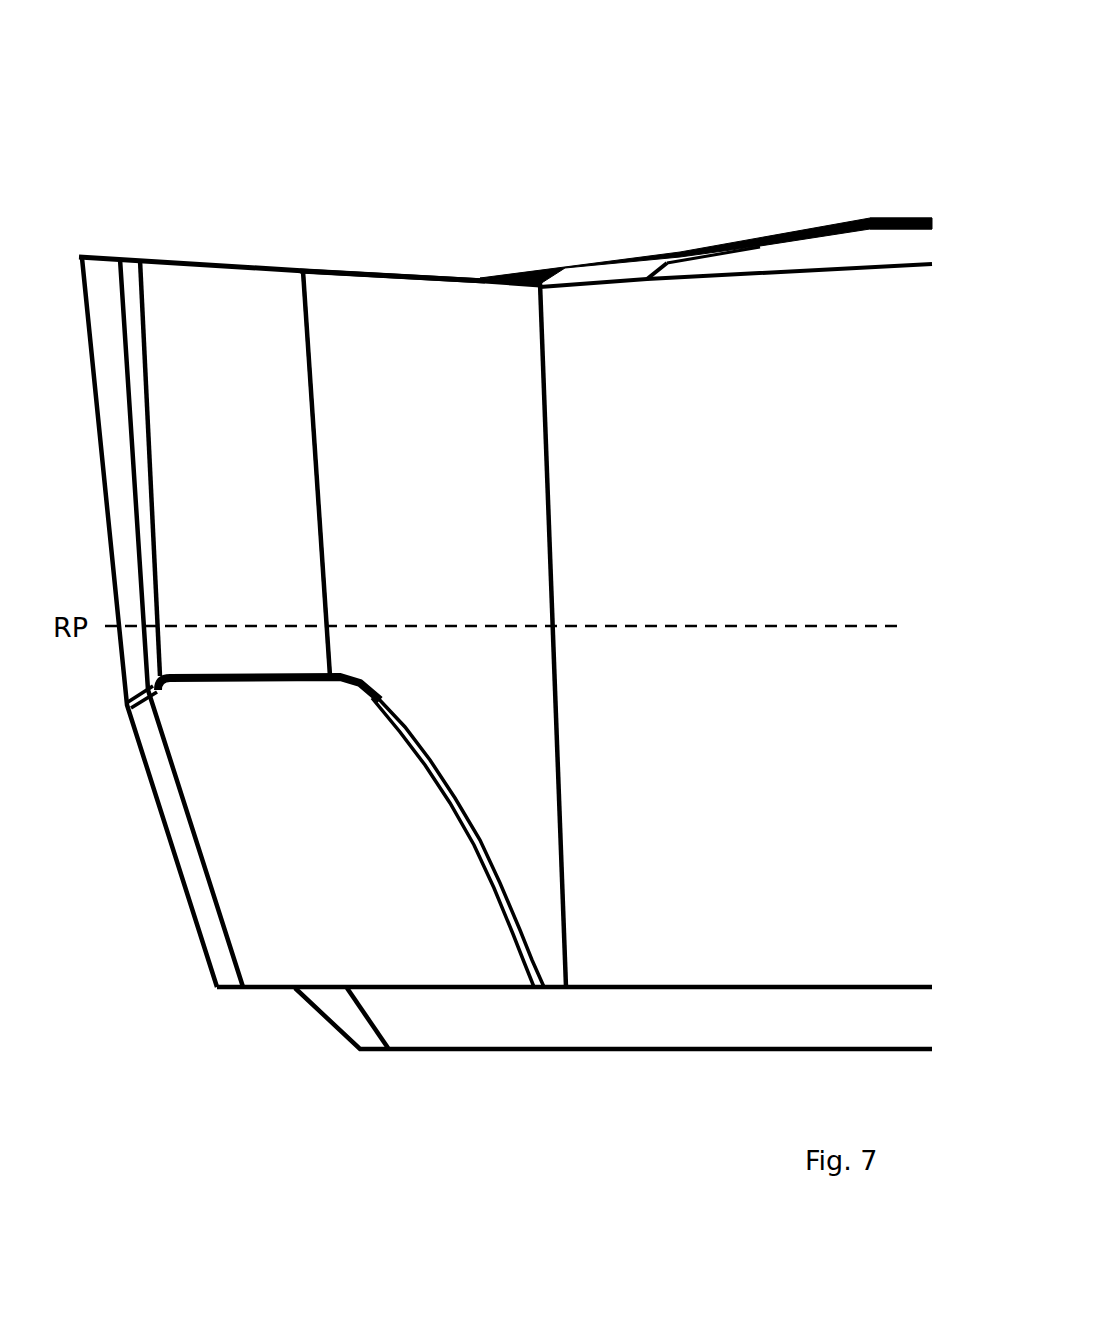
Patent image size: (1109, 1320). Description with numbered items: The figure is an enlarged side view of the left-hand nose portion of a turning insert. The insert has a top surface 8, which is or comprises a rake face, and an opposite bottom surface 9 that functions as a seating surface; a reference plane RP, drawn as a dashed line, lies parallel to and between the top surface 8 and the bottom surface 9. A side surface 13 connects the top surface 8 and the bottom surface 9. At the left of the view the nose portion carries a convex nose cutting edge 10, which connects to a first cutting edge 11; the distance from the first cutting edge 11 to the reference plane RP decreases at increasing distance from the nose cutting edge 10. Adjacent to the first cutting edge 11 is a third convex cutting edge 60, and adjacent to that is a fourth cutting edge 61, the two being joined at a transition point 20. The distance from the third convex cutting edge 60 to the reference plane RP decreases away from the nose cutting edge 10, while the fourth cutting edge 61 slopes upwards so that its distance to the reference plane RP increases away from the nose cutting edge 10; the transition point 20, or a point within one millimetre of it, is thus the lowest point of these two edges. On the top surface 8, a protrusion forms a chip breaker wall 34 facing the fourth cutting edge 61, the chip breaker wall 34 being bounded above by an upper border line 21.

The top surface 8 is at (913, 218).
The bottom surface 9 is at (537, 1050).
The nose cutting edge 10 is at (100, 254).
The first cutting edge 11 is at (212, 262).
The side surface 13 is at (385, 663).
The transition point 20 is at (541, 285).
The upper border line 21 is at (897, 216).
The chip breaker wall 34 is at (887, 247).
The third convex cutting edge 60 is at (413, 273).
The fourth cutting edge 61 is at (795, 268).